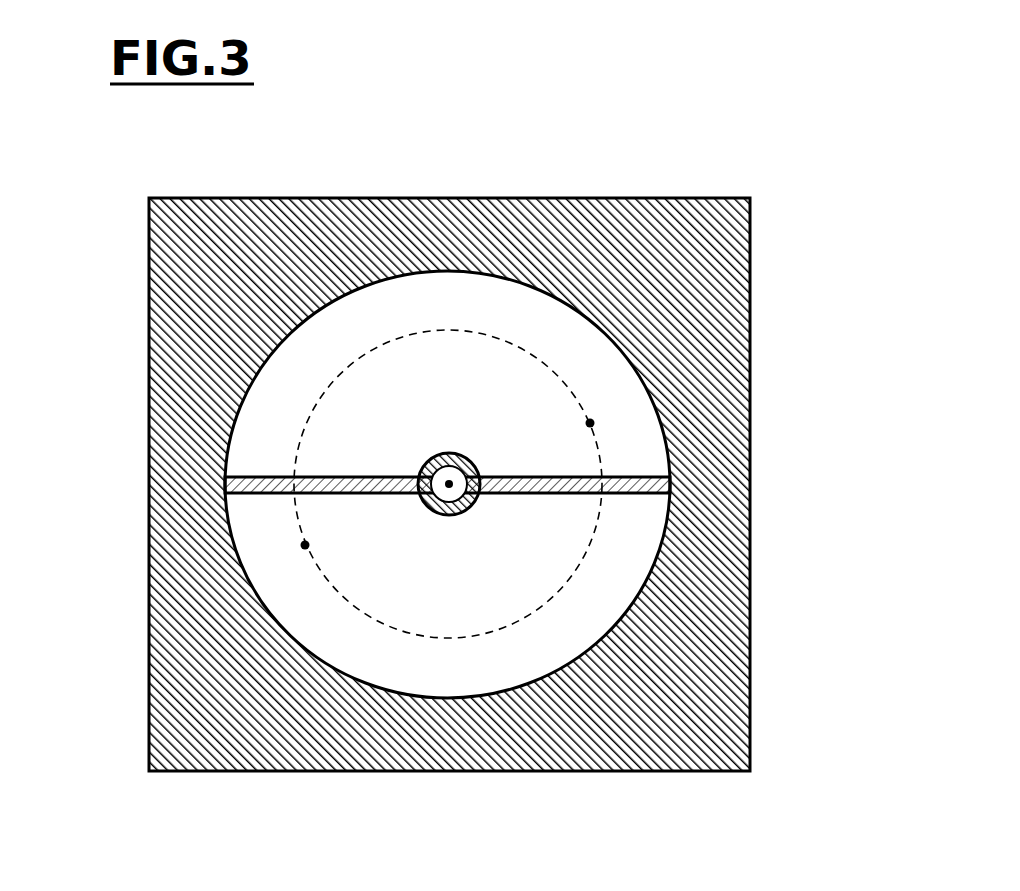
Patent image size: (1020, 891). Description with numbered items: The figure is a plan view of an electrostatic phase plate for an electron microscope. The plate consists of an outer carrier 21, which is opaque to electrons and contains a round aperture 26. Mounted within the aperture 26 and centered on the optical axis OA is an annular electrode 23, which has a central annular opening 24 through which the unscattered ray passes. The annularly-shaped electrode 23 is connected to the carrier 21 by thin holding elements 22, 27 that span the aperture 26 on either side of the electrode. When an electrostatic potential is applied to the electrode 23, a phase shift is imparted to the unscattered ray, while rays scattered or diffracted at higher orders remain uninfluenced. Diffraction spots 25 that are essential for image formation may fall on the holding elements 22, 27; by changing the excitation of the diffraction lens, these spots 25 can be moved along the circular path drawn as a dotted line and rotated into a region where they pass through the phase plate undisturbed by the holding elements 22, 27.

The outer carrier 21 is at (735, 260).
The holding element 22 is at (640, 493).
The annular electrode 23 is at (466, 456).
The central annular opening 24 is at (468, 508).
The diffraction spots 25 is at (590, 423).
The round aperture 26 is at (443, 232).
The holding element 27 is at (250, 476).
The optical axis OA is at (447, 483).